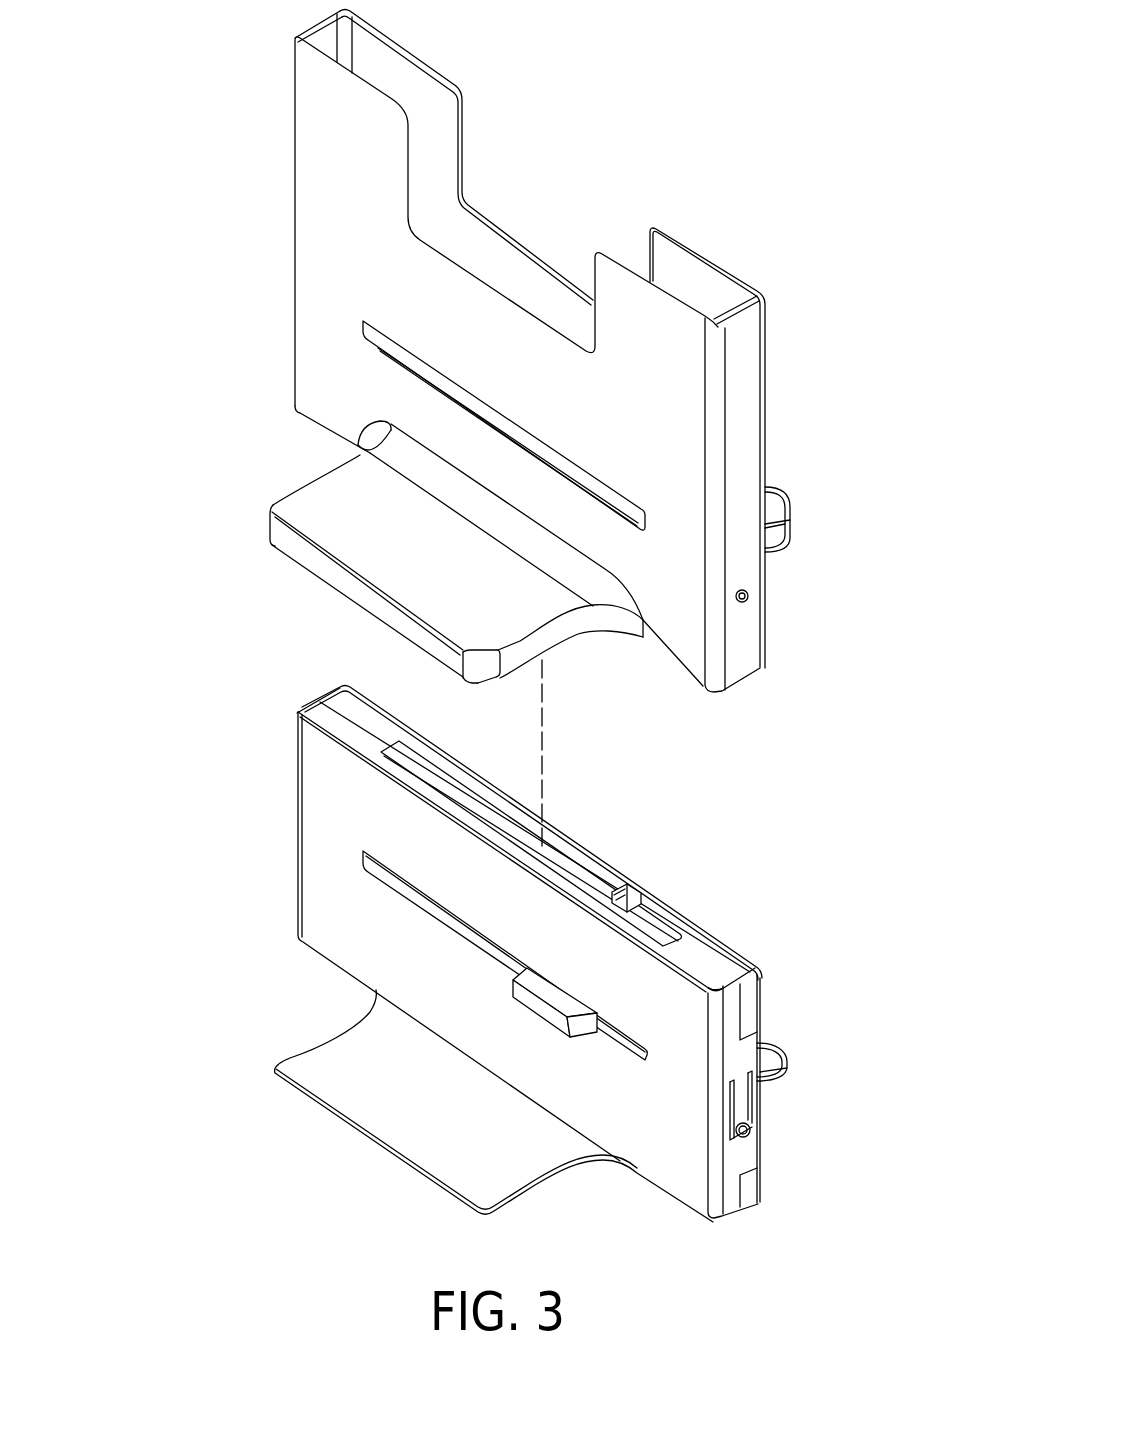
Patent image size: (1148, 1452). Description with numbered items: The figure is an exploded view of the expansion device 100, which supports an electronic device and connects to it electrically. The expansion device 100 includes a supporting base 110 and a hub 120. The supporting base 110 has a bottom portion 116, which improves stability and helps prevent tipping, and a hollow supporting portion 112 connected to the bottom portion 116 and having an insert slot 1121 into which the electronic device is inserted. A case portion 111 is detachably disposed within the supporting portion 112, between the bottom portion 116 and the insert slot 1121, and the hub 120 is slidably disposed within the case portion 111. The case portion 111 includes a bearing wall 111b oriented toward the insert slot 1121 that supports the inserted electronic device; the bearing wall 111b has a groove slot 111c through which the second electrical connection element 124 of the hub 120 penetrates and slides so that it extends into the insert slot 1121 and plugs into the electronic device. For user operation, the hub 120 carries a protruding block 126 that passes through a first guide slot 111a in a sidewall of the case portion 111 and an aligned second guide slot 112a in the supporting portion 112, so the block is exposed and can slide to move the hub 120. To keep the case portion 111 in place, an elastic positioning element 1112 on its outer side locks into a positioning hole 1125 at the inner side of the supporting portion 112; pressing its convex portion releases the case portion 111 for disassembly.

The expansion device 100 is at (663, 88).
The supporting base 110 is at (500, 616).
The supporting portion 112 is at (345, 268).
The insert slot 1121 is at (430, 210).
The second guide slot 112a is at (365, 345).
The bottom portion 116 is at (358, 506).
The positioning hole 1125 is at (760, 600).
The case portion 111 is at (347, 806).
The first guide slot 111a is at (383, 885).
The bearing wall 111b is at (725, 958).
The groove slot 111c is at (458, 790).
The elastic positioning element 1112 is at (752, 1128).
The hub 120 is at (614, 1037).
The second electrical connection element 124 is at (626, 887).
The protruding block 126 is at (560, 998).